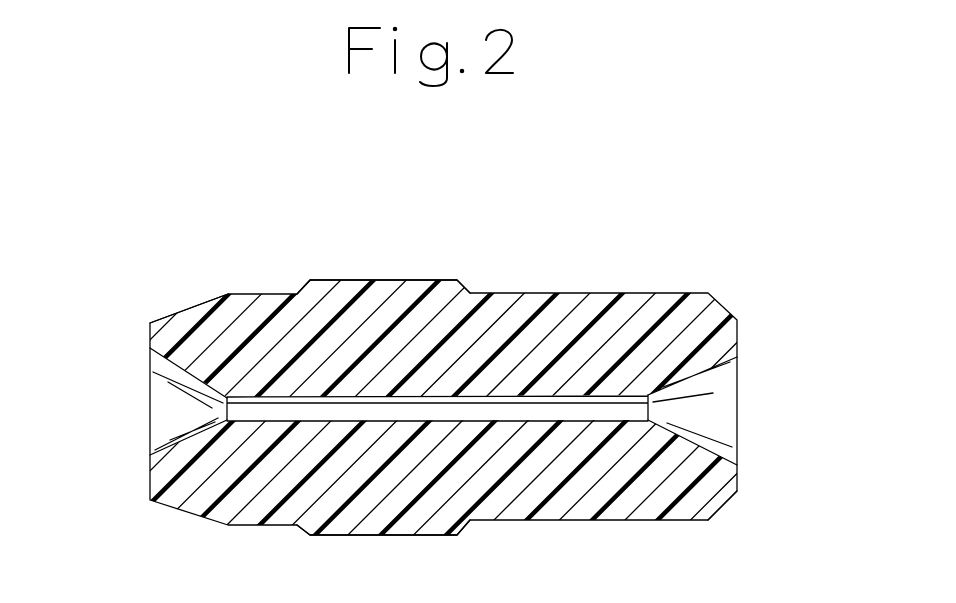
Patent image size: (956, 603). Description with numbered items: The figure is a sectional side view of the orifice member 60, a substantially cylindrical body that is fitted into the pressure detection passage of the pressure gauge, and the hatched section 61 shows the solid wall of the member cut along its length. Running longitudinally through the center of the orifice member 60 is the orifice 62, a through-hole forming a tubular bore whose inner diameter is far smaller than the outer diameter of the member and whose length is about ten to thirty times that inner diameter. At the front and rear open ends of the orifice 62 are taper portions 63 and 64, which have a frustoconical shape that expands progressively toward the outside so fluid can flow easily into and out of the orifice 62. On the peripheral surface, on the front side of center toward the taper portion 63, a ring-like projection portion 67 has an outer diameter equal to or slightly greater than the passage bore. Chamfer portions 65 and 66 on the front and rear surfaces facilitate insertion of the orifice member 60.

The orifice member 60 is at (700, 215).
The body wall 61 is at (264, 310).
The orifice 62 is at (555, 407).
The taper portion 63 is at (158, 391).
The taper portion 64 is at (693, 370).
The chamfer portion 65 is at (187, 307).
The chamfer portion 66 is at (725, 507).
The ring-like projection portion 67 is at (415, 279).